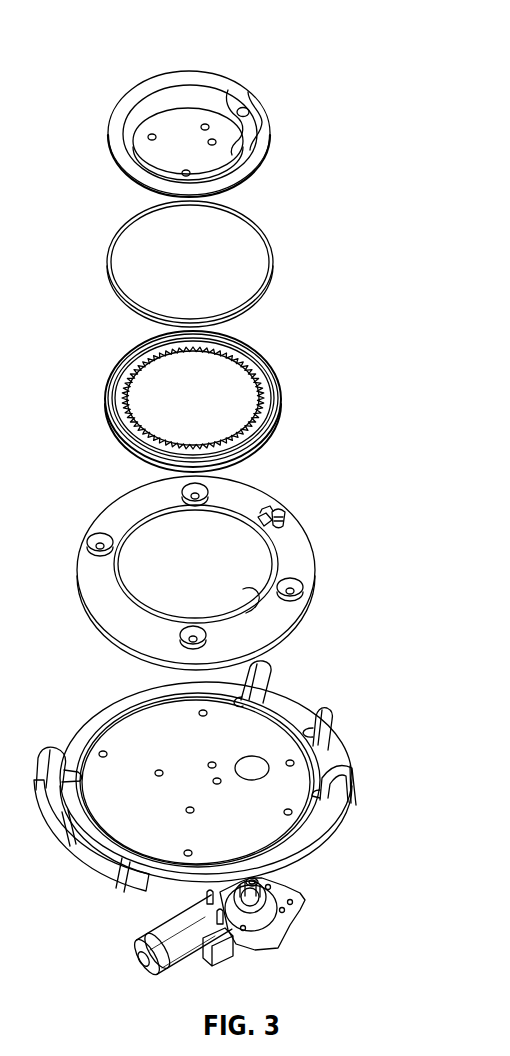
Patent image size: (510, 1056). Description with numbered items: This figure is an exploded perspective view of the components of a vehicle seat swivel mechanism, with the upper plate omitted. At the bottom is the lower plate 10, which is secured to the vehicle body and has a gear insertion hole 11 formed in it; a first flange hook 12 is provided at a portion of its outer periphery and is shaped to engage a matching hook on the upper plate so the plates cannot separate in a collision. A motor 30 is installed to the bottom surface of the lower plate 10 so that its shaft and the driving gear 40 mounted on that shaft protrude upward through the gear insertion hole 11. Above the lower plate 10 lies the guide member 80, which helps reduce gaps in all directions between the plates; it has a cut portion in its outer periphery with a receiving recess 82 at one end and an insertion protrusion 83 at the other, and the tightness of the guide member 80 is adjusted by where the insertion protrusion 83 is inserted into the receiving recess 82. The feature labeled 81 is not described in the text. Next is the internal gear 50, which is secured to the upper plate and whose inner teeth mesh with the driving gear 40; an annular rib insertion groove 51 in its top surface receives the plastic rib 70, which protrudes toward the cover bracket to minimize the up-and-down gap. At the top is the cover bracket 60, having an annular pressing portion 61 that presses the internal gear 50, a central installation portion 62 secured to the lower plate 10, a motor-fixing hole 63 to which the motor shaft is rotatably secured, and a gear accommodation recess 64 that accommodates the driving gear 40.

The lower plate 10 is at (244, 768).
The gear insertion hole 11 is at (252, 756).
The first flange hook 12 is at (343, 798).
The motor 30 is at (209, 915).
The driving gear 40 is at (276, 887).
The internal gear 50 is at (244, 391).
The rib insertion groove 51 is at (255, 347).
The cover bracket 60 is at (263, 128).
The pressing portion 61 is at (247, 163).
The installation portion 62 is at (172, 134).
The motor-fixing hole 63 is at (250, 110).
The gear accommodation recess 64 is at (222, 104).
The rib 70 is at (272, 260).
The guide member 80 is at (244, 545).
The support notch 81 is at (247, 588).
The receiving recess 82 is at (270, 508).
The insertion protrusion 83 is at (280, 514).